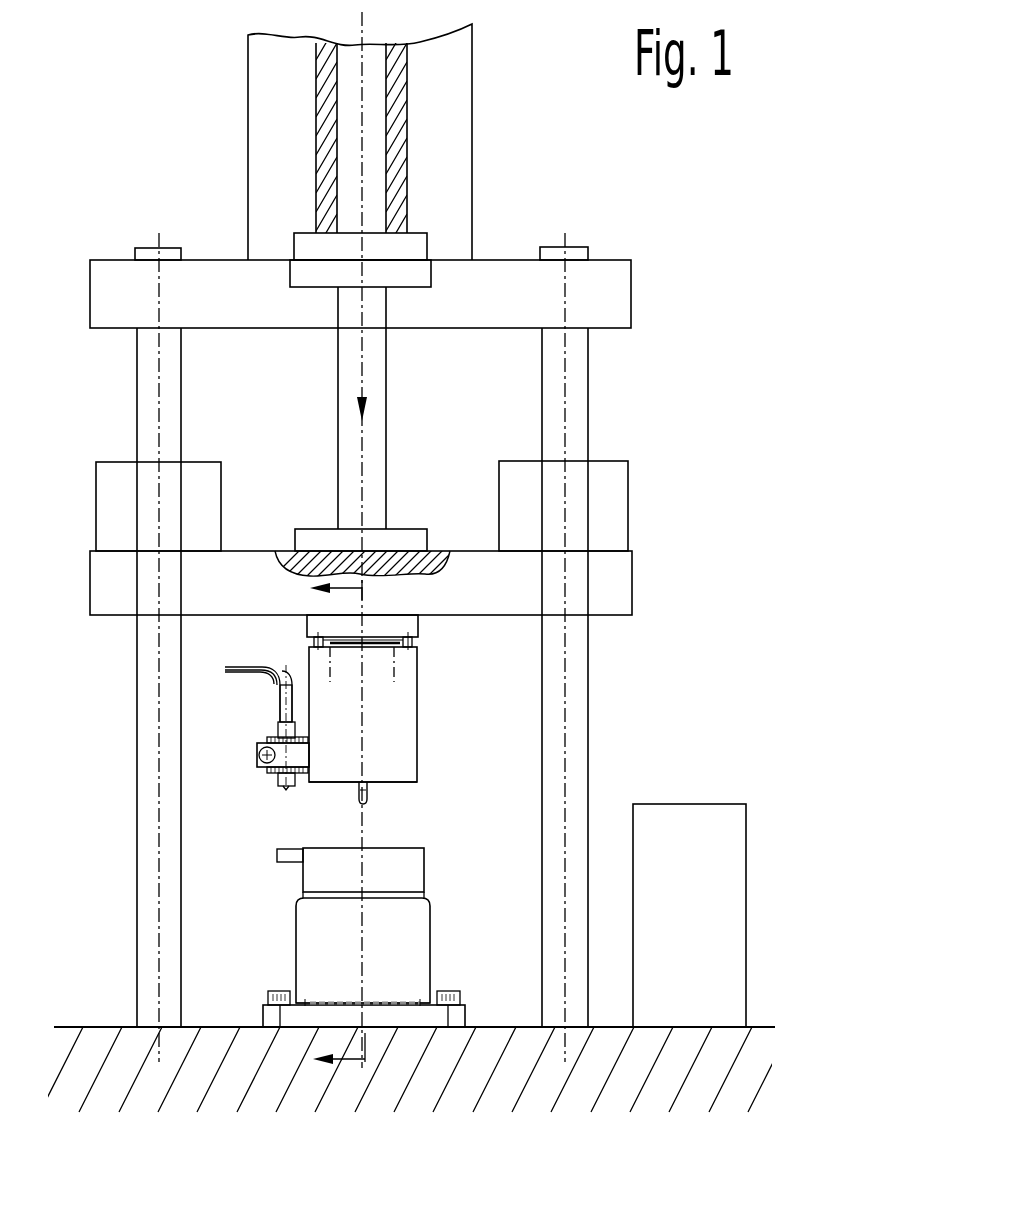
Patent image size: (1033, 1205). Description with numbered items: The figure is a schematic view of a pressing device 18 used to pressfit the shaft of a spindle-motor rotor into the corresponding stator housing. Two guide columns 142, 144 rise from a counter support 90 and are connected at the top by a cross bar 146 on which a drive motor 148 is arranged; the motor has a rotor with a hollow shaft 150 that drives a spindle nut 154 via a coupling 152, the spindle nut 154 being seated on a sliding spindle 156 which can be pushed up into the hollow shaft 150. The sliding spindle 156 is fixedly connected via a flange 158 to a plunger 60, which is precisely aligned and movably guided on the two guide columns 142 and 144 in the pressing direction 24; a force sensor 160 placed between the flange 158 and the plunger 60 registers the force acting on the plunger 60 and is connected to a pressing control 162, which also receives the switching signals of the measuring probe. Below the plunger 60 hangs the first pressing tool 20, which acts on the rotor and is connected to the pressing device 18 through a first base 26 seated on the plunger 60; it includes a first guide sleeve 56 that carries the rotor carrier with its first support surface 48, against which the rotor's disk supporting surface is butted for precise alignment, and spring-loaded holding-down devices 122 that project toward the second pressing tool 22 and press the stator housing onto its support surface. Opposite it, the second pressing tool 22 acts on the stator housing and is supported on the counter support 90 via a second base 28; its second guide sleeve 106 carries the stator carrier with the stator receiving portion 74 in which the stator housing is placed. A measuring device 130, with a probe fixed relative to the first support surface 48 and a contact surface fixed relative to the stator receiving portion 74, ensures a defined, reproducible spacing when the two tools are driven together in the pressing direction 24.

The pressing device 18 is at (612, 196).
The first pressing tool 20 is at (400, 722).
The second pressing tool 22 is at (381, 914).
The pressing direction 24 is at (367, 412).
The first base 26 is at (402, 629).
The second base 28 is at (433, 1015).
The first support surface 48 is at (395, 783).
The first guide sleeve 56 is at (372, 695).
The plunger 60 is at (450, 583).
The stator receiving portion 74 is at (403, 868).
The counter support 90 is at (103, 1070).
The second guide sleeve 106 is at (402, 938).
The holding-down device 122 is at (367, 793).
The measuring device 130 is at (235, 757).
The guide column 142 is at (155, 384).
The guide column 144 is at (572, 385).
The cross bar 146 is at (605, 294).
The drive motor 148 is at (440, 152).
The hollow shaft 150 is at (396, 113).
The coupling 152 is at (393, 243).
The spindle nut 154 is at (398, 272).
The sliding spindle 156 is at (372, 355).
The flange 158 is at (313, 542).
The force sensor 160 is at (415, 540).
The pressing control 162 is at (687, 830).